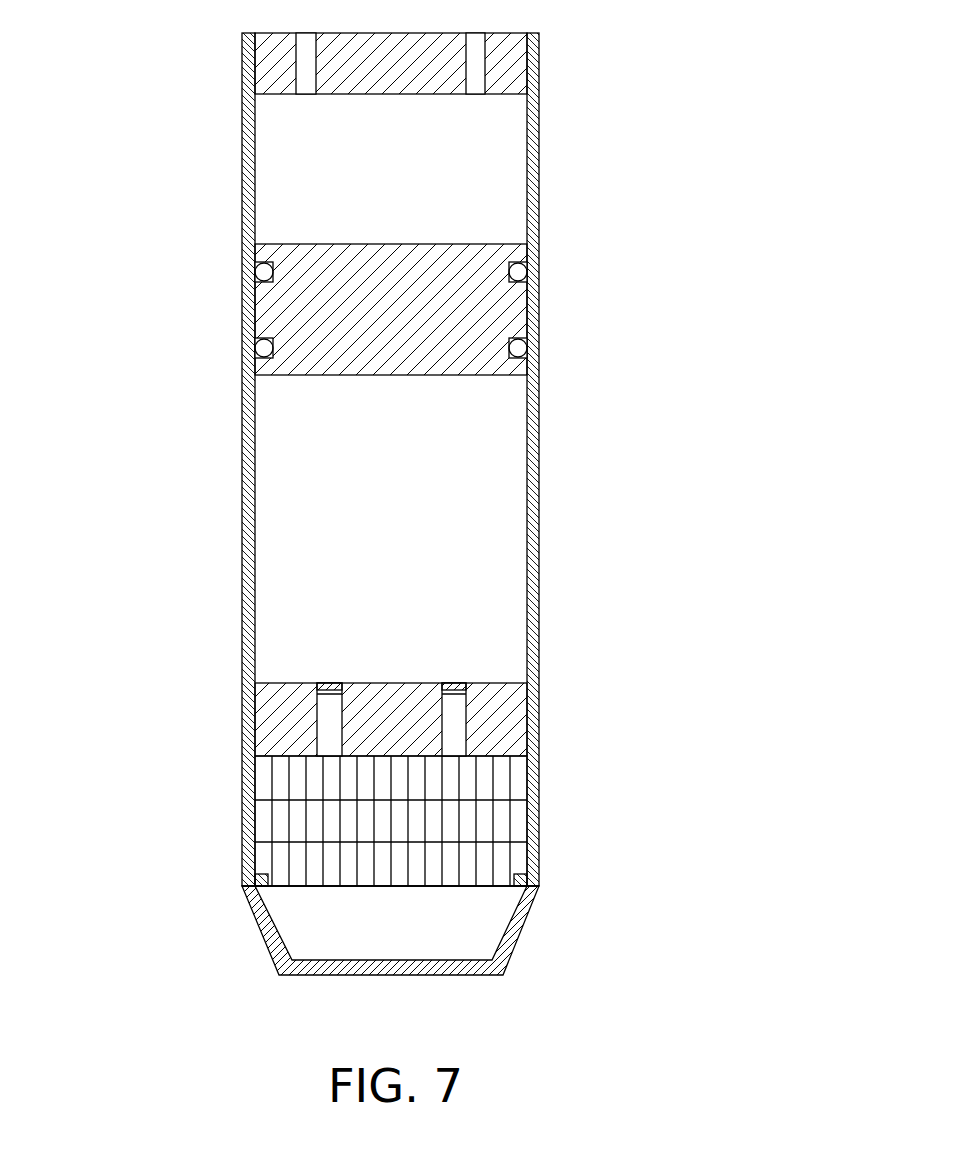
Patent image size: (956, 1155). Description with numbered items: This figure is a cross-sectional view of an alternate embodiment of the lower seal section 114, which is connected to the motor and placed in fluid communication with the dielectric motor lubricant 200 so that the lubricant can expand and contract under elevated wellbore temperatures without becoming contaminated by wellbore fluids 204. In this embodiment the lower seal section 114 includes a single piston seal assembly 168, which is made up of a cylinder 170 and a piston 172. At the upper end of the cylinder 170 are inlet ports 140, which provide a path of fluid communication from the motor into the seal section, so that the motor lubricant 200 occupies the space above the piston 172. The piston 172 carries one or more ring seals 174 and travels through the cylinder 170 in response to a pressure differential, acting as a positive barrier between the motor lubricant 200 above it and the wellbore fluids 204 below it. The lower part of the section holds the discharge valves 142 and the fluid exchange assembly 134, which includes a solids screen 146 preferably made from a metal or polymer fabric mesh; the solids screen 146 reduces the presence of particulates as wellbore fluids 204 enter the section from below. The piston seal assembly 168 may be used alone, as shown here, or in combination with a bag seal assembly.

The lower seal section 114 is at (715, 469).
The fluid exchange assembly 134 is at (563, 818).
The inlet ports 140 is at (297, 70).
The discharge valves 142 is at (317, 740).
The solids screen 146 is at (247, 812).
The piston seal assembly 168 is at (222, 305).
The cylinder 170 is at (530, 583).
The piston 172 is at (452, 258).
The ring seals 174 is at (528, 335).
The motor lubricant 200 is at (410, 164).
The wellbore fluids 204 is at (410, 930).